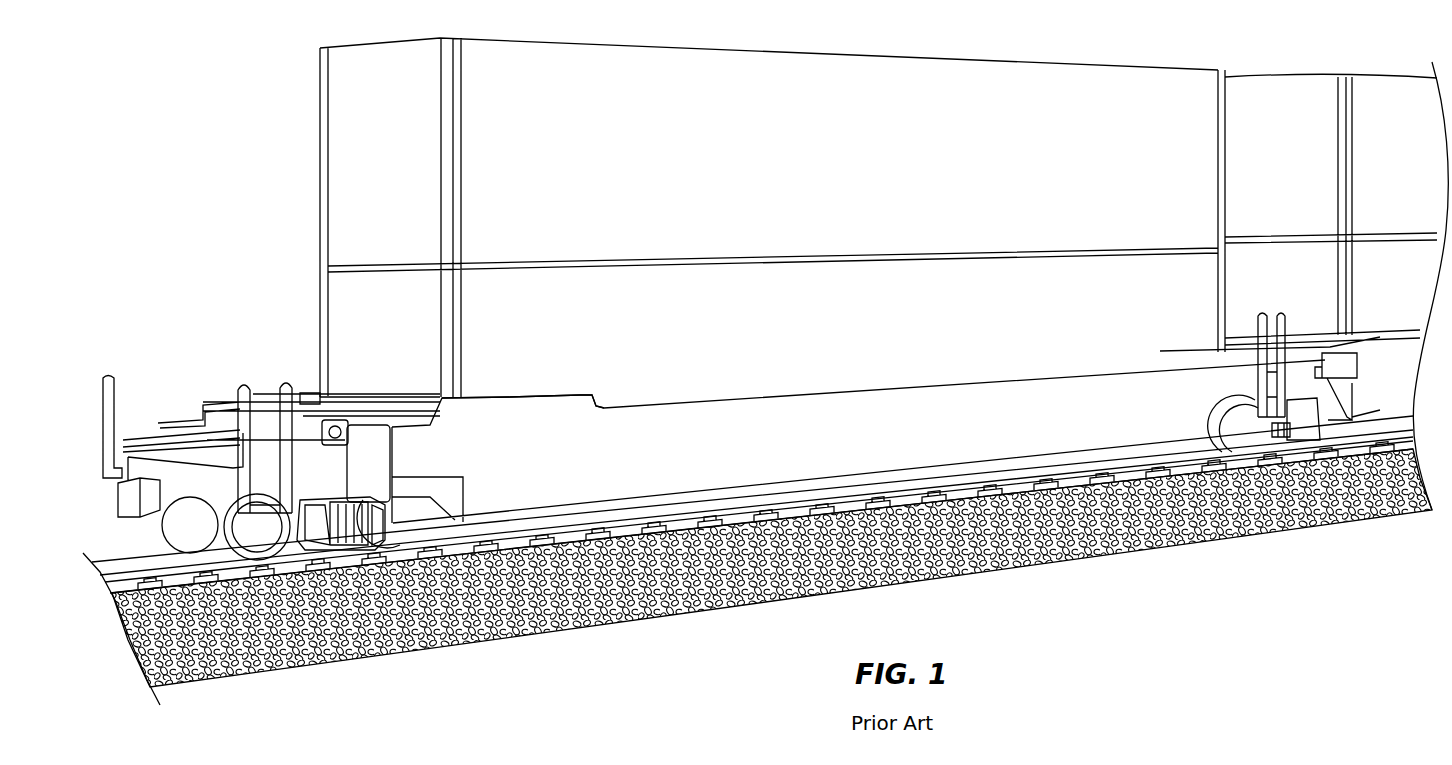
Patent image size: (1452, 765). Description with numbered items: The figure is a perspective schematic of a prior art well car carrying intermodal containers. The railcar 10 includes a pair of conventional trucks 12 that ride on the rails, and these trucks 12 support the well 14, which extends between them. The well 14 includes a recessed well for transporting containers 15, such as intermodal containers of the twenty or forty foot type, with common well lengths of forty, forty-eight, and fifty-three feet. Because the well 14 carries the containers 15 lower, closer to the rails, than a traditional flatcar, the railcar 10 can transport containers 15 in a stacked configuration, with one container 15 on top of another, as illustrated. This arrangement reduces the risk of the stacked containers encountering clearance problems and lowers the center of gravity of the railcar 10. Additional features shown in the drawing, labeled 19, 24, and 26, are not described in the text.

The railcar 10 is at (252, 48).
The trucks 12 is at (373, 527).
The well 14 is at (771, 460).
The containers 15 is at (666, 187).
The ladder 19 is at (245, 475).
The container securing fitting 24 is at (318, 393).
The well car side wall top edge 26 is at (512, 398).